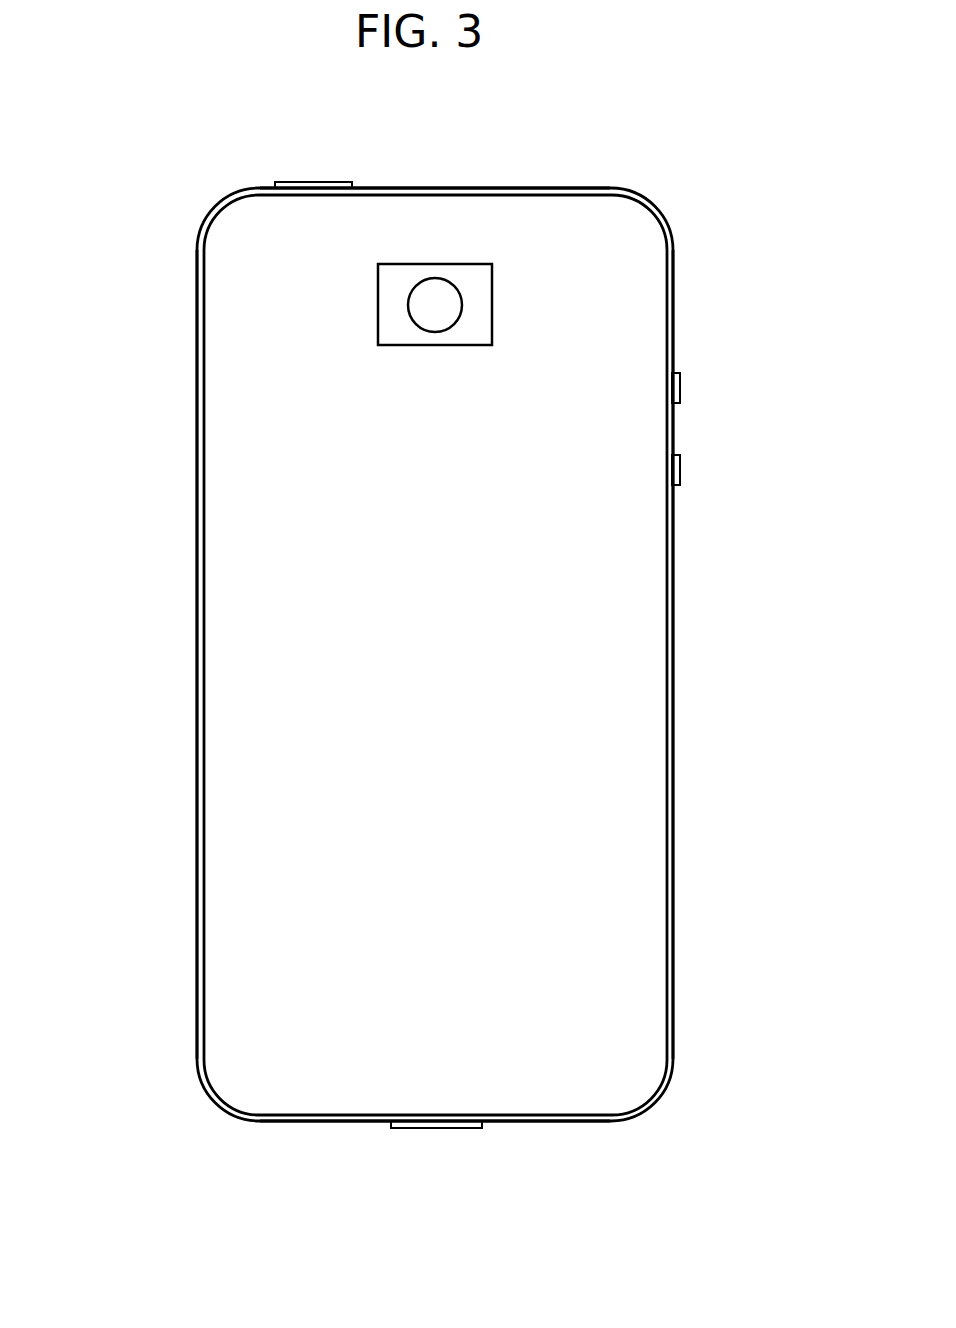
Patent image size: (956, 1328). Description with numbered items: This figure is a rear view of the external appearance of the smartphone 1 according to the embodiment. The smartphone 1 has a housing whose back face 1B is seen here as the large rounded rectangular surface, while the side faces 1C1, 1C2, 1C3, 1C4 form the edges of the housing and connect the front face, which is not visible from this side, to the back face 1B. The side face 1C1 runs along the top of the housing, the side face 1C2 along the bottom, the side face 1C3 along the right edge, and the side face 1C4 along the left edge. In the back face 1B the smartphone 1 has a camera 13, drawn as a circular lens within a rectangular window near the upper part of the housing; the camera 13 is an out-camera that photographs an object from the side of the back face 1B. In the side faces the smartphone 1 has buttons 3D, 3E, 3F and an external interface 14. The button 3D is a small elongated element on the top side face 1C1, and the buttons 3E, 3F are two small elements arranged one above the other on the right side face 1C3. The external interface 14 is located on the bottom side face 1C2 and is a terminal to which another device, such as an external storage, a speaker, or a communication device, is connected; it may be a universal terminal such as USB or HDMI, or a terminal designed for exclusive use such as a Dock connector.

The smartphone 1 is at (428, 666).
The back face 1B is at (230, 517).
The side face 1C1 is at (542, 188).
The side face 1C2 is at (554, 1121).
The side face 1C3 is at (673, 755).
The side face 1C4 is at (198, 677).
The button 3D is at (311, 182).
The button 3E is at (680, 390).
The button 3F is at (680, 470).
The camera 13 is at (437, 296).
The external interface 14 is at (430, 1128).